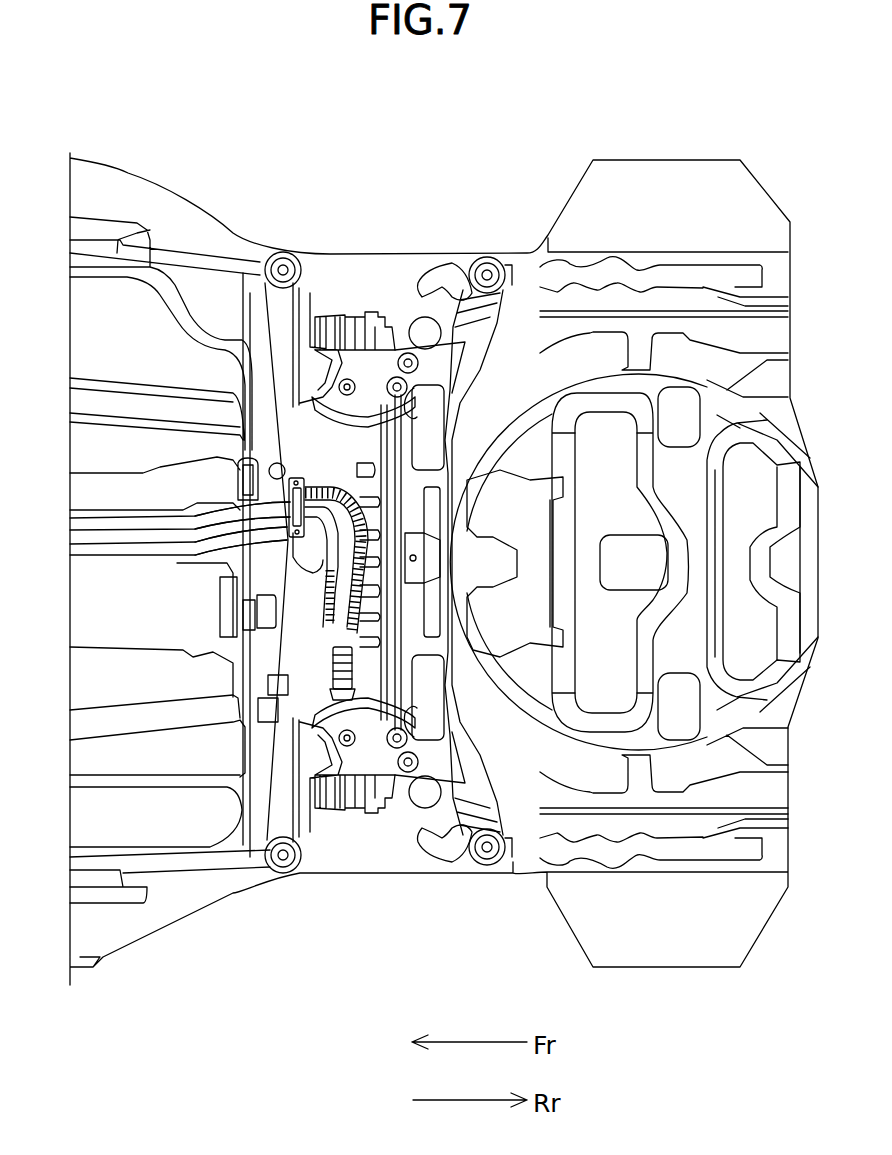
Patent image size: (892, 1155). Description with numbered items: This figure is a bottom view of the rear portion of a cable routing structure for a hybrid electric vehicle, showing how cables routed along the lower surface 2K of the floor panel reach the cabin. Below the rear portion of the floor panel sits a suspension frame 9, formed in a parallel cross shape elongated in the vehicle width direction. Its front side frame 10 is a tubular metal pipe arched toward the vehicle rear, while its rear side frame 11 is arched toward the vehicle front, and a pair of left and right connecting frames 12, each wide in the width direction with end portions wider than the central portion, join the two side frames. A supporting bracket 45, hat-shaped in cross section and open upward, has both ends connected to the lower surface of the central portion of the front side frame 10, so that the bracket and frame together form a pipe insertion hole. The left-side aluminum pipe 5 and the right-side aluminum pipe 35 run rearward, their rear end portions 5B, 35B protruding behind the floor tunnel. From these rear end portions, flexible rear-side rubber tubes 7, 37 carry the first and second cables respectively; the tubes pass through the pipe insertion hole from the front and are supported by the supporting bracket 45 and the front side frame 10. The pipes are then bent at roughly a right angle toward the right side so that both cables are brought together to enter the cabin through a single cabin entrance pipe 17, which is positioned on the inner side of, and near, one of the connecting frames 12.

The lower surface of floor panel 2K is at (335, 843).
The left-side aluminum pipe 5 is at (89, 510).
The rear end portion of left-side aluminum pipe 5B is at (258, 505).
The rear-side rubber tube 7 is at (334, 478).
The suspension frame 9 is at (408, 291).
The front side frame 10 is at (300, 460).
The rear side frame 11 is at (460, 395).
The connecting frame 12 is at (388, 360).
The cabin entrance pipe 17 is at (337, 677).
The right-side aluminum pipe 35 is at (92, 547).
The rear end portion of right-side aluminum pipe 35B is at (250, 553).
The rear-side rubber tube 37 is at (331, 537).
The supporting bracket 45 is at (290, 520).